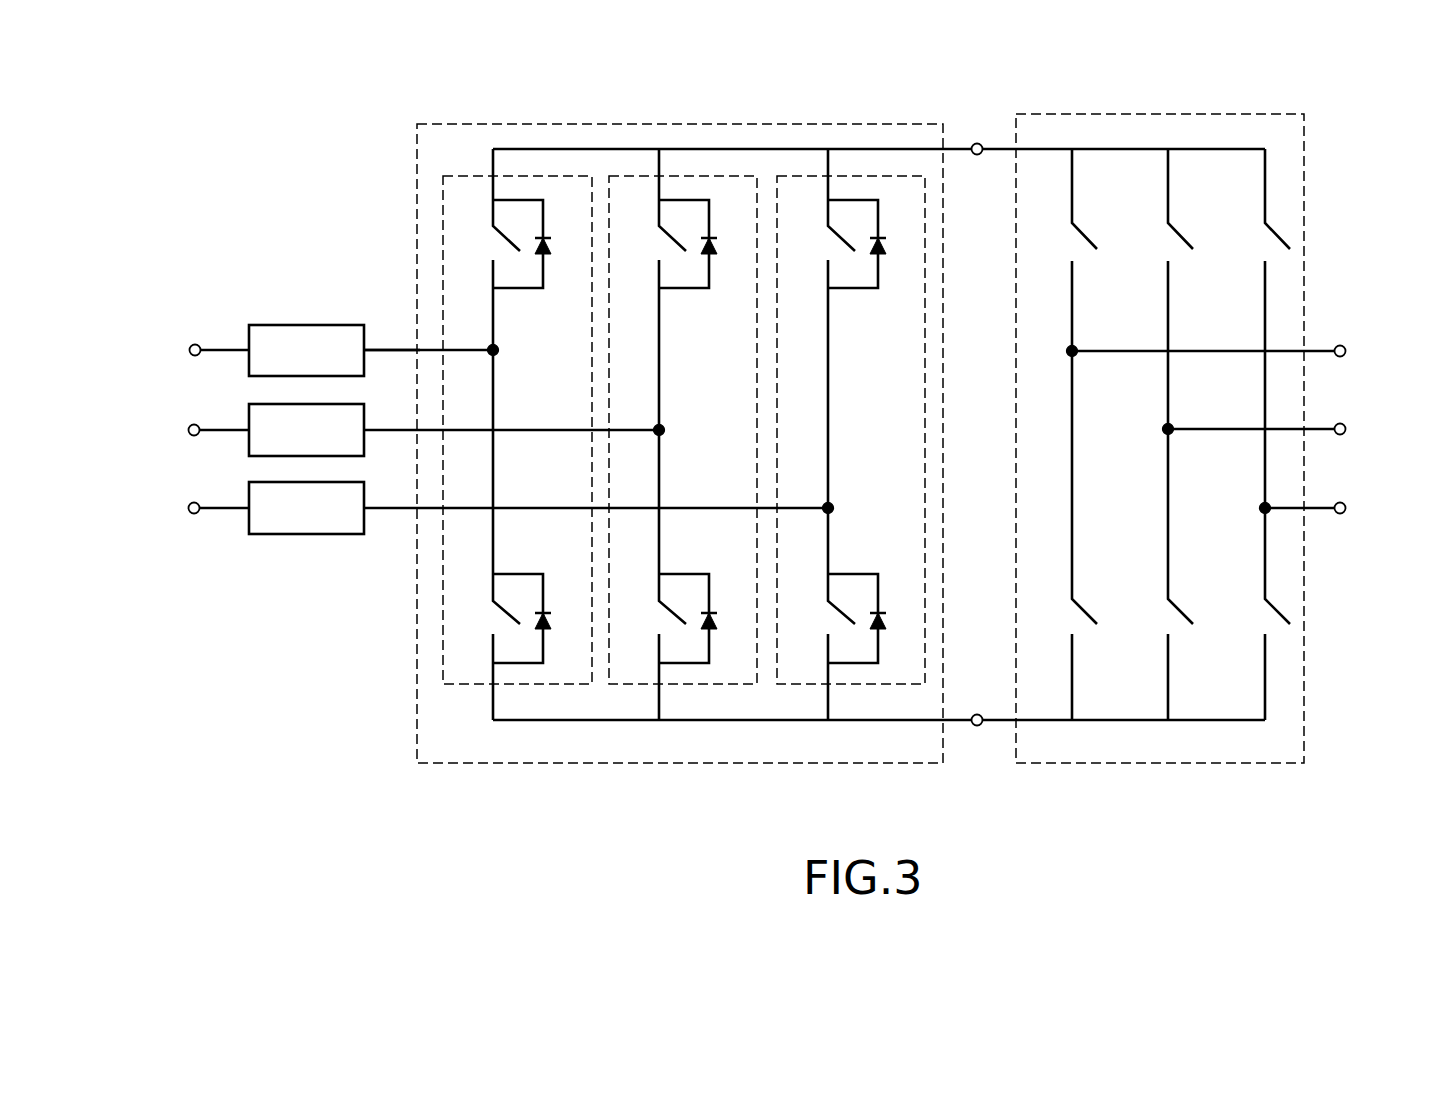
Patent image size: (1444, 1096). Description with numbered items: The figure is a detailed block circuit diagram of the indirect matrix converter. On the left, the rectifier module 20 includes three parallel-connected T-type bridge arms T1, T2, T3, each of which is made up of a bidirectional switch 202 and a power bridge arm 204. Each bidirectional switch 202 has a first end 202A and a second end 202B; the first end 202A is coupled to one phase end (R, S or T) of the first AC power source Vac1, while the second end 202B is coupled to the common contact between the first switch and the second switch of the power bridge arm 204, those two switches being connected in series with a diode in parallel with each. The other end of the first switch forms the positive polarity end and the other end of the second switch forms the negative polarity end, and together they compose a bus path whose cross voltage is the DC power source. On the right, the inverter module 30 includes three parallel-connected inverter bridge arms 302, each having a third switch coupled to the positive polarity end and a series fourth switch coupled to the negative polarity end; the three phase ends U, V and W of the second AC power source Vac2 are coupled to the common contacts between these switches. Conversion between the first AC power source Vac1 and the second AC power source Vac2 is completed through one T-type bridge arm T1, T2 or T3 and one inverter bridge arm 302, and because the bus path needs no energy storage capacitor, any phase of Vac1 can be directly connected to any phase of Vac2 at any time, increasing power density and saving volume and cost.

The rectifier module 20 is at (433, 150).
The power bridge arm 204 is at (463, 185).
The bidirectional switch 202 is at (513, 429).
The first end 202A is at (228, 347).
The second end 202B is at (390, 345).
The inverter module 30 is at (1204, 125).
The inverter bridge arm 302 is at (1094, 725).
The T-type bridge arm T1 is at (522, 727).
The T-type bridge arm T2 is at (697, 727).
The T-type bridge arm T3 is at (855, 727).
The first AC power source Vac1 is at (152, 337).
The second AC power source Vac2 is at (1380, 338).